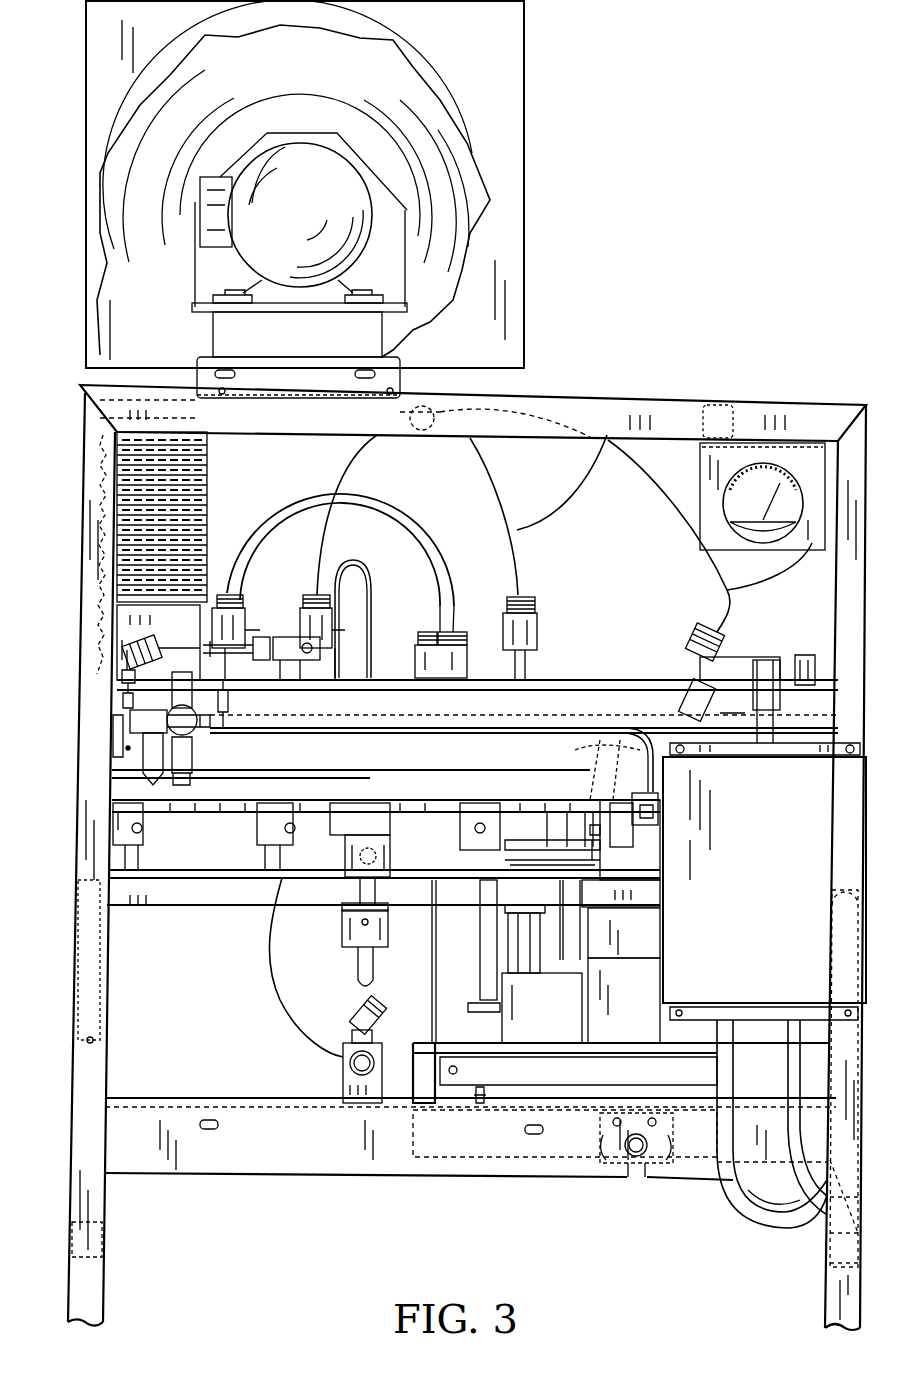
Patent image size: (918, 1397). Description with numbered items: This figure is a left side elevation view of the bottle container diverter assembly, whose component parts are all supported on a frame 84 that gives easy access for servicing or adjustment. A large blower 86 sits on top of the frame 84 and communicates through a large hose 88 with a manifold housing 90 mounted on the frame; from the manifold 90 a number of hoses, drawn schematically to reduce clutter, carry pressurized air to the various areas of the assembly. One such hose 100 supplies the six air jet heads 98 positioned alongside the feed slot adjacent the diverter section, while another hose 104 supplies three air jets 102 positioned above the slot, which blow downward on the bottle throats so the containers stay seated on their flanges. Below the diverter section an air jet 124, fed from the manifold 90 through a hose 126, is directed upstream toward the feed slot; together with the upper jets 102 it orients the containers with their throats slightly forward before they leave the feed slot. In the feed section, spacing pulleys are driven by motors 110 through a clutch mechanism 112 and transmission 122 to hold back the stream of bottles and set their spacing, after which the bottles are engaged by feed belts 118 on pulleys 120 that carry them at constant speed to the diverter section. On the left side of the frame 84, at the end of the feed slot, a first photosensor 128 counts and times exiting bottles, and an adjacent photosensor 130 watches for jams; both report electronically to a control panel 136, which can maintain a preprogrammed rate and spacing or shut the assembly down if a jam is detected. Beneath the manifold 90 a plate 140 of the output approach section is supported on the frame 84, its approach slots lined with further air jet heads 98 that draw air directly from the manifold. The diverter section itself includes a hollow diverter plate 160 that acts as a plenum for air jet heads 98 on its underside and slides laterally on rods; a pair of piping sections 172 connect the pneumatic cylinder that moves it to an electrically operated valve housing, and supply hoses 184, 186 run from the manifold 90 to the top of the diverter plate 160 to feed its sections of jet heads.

The frame 84 is at (667, 420).
The blower 86 is at (510, 252).
The hose 88 is at (113, 496).
The manifold housing 90 is at (112, 655).
The air jet heads 98 is at (513, 803).
The hose 100 is at (605, 440).
The air jets 102 is at (540, 803).
The hose 104 is at (812, 543).
The motors 110 is at (650, 872).
The clutch mechanism 112 is at (653, 1033).
The feed belts 118 is at (582, 880).
The pulleys 120 is at (530, 880).
The transmission 122 is at (573, 1015).
The air jet 124 is at (368, 1012).
The hose 126 is at (268, 1010).
The photosensor 128 is at (478, 1105).
The photosensor 130 is at (132, 880).
The control panel 136 is at (790, 855).
The plate 140 is at (112, 827).
The diverter plate 160 is at (458, 875).
The piping sections 172 is at (318, 595).
The supply hose 184 is at (403, 527).
The supply hose 186 is at (443, 560).